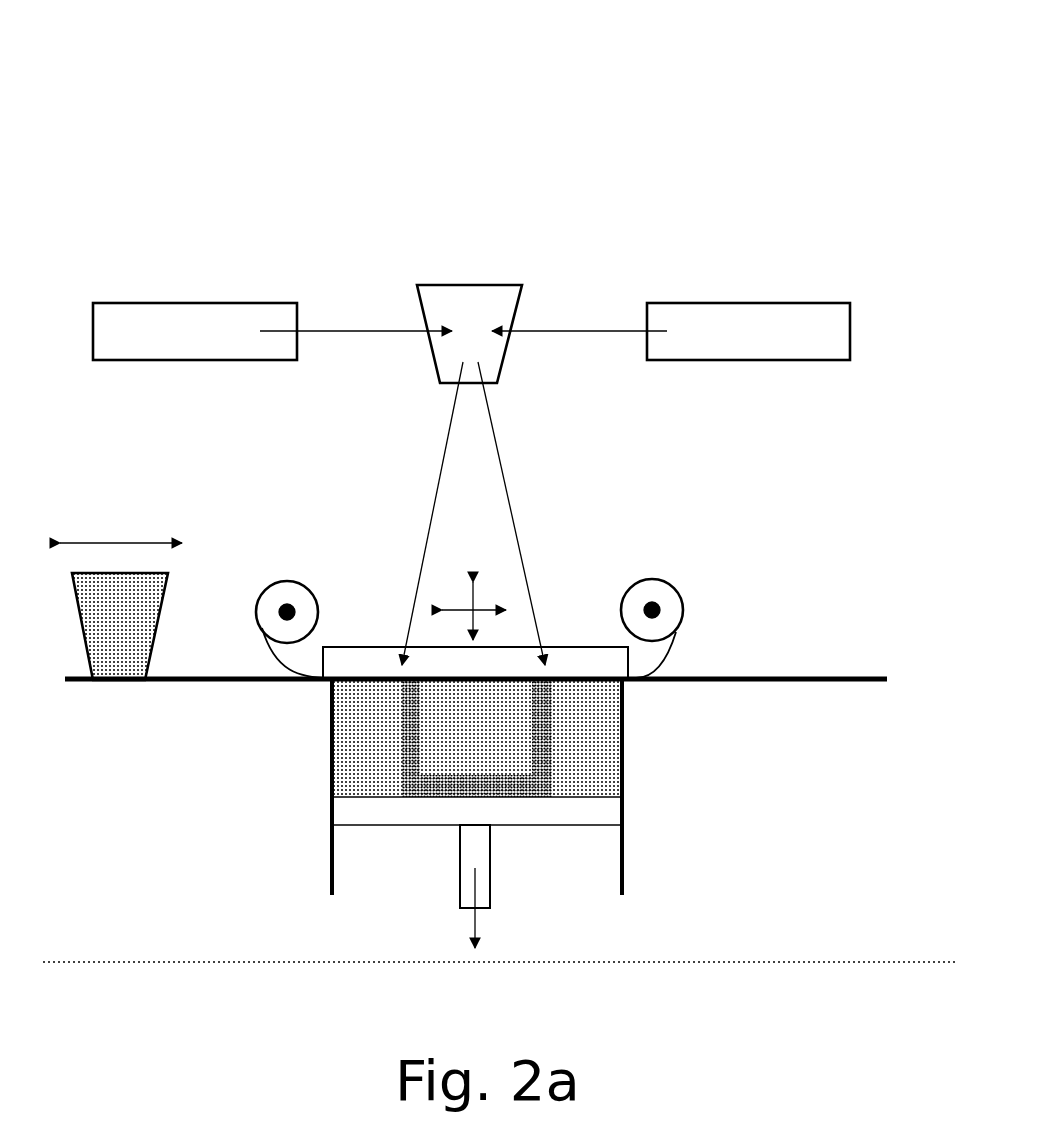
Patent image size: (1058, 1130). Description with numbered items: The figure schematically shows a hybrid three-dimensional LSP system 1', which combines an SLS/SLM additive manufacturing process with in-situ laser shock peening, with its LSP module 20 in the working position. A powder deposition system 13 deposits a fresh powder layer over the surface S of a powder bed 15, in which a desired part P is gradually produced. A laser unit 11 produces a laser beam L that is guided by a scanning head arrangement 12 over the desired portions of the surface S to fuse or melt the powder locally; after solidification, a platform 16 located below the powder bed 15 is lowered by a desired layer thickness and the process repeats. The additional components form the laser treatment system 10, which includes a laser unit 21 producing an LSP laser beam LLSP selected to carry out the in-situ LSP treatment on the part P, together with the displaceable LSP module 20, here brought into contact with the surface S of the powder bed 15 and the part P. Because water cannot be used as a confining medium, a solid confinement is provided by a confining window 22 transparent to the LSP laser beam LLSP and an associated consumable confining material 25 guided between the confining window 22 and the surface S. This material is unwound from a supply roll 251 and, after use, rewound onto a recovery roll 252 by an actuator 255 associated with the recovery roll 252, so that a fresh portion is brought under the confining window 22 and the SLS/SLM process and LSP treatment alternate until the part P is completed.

The hybrid 3D LSP system 1' is at (499, 487).
The laser treatment system 10 is at (650, 236).
The laser unit 11 is at (112, 318).
The scanning head arrangement 12 is at (497, 297).
The laser unit 21 is at (826, 322).
The powder deposition system 13 is at (140, 623).
The powder bed 15 is at (597, 737).
The platform 16 is at (398, 822).
The LSP module 20 is at (572, 618).
The confining window 22 is at (600, 667).
The consumable confining material 25 is at (680, 660).
The supply roll 251 is at (280, 585).
The recovery roll 252 is at (680, 595).
The actuator 255 is at (645, 600).
The laser beam L is at (359, 331).
The LSP laser beam LLSP is at (585, 331).
The surface S is at (375, 672).
The part P is at (405, 770).